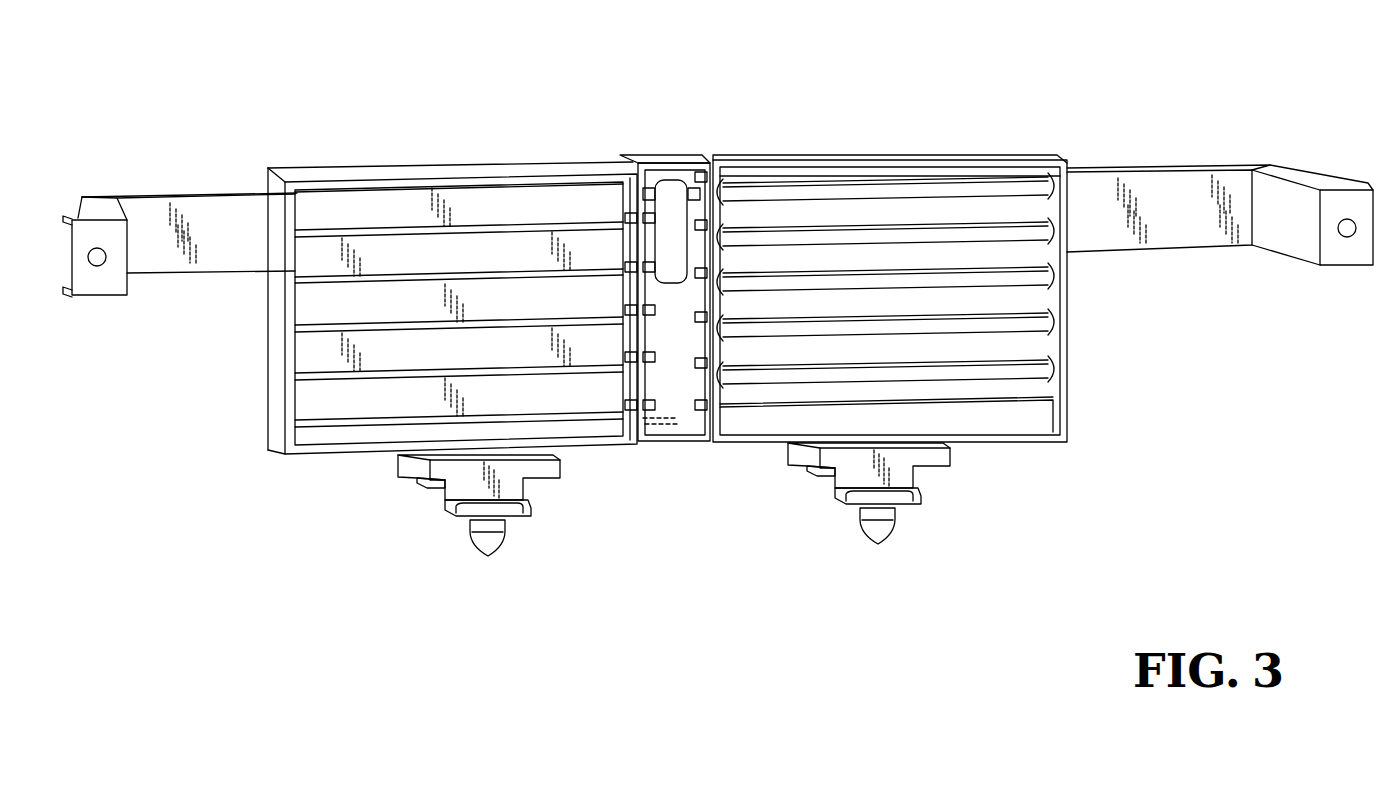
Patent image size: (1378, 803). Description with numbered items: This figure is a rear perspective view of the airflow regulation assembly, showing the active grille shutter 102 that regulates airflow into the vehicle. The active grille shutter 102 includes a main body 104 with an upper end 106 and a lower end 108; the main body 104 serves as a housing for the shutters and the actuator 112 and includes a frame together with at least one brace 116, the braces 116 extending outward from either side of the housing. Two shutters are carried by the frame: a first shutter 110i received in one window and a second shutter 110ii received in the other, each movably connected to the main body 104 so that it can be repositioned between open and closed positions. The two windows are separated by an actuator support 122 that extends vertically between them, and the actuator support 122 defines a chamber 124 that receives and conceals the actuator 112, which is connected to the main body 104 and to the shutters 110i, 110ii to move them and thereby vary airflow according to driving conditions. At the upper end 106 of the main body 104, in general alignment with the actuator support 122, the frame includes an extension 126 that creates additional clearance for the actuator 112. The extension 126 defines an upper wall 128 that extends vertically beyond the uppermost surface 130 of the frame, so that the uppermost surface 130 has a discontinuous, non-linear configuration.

The active grille shutter 102 is at (911, 281).
The main body 104 is at (852, 150).
The upper end 106 is at (923, 153).
The lower end 108 is at (1010, 443).
The first shutter 110i is at (1008, 205).
The second shutter 110ii is at (485, 250).
The actuator 112 is at (668, 183).
The brace 116 is at (202, 172).
The actuator support 122 is at (667, 294).
The chamber 124 is at (677, 388).
The extension 126 is at (647, 153).
The upper wall 128 is at (688, 158).
The uppermost surface 130 is at (452, 275).